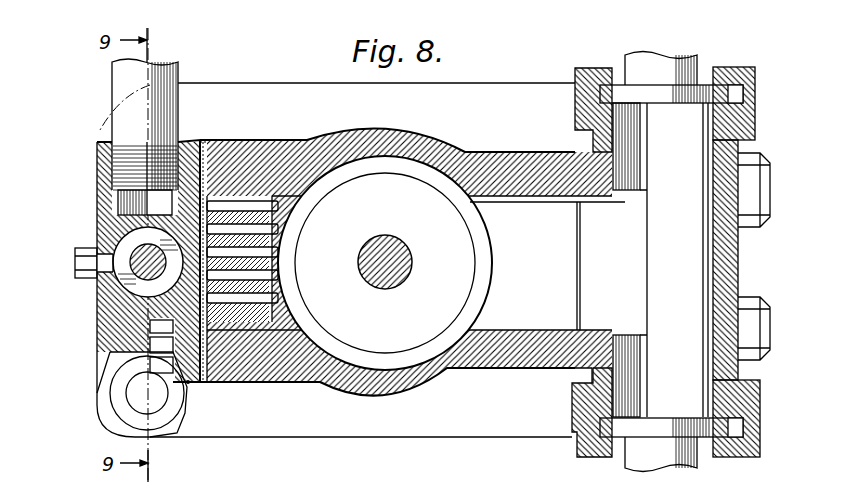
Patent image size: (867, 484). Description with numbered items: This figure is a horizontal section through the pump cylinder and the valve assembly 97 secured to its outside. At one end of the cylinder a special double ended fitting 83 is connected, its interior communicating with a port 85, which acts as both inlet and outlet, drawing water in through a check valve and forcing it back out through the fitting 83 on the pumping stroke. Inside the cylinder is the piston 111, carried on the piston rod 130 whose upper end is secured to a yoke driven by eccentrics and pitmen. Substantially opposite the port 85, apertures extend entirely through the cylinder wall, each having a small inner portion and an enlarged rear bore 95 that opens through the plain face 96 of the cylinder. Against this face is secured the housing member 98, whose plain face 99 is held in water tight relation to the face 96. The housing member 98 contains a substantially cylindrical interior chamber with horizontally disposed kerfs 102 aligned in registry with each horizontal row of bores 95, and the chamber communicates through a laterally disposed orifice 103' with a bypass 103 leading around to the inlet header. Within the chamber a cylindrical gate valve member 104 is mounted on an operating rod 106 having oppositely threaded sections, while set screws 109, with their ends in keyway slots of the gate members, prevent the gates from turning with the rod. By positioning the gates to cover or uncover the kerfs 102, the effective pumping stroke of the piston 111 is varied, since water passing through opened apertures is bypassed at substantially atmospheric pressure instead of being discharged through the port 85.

The double ended fitting 83 is at (737, 263).
The port 85 is at (537, 312).
The enlarged rear bore 95 is at (252, 205).
The plain face 96 is at (242, 123).
The valve assembly 97 is at (152, 292).
The housing member 98 is at (153, 324).
The plain face 99 is at (188, 382).
The kerfs 102 is at (144, 314).
The bypass 103 is at (111, 124).
The orifice 103' is at (105, 202).
The gate valve member 104 is at (128, 278).
The operating rod 106 is at (133, 250).
The set screws 109 is at (78, 263).
The piston 111 is at (445, 268).
The piston rod 130 is at (397, 226).